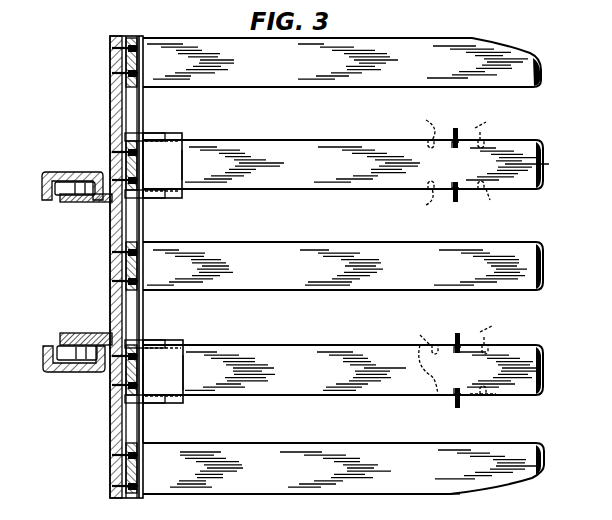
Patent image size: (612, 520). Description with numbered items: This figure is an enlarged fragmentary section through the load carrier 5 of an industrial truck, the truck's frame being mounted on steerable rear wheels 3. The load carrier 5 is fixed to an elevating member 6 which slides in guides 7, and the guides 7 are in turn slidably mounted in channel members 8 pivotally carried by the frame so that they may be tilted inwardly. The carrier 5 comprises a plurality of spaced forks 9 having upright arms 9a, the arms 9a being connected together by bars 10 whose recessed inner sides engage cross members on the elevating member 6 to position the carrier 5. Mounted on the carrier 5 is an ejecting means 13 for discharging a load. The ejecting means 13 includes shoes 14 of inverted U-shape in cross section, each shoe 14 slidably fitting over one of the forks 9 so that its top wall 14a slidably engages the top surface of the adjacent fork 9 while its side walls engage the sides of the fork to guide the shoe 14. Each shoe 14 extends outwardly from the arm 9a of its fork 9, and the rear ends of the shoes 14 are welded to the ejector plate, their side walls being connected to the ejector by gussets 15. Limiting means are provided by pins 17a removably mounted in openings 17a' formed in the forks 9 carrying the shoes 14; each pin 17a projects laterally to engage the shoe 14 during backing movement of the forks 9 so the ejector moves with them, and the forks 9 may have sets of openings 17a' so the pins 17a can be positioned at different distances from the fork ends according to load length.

The rear wheels 3 is at (13, 513).
The load carrier 5 is at (455, 503).
The elevating member 6 is at (95, 333).
The guides 7 is at (58, 195).
The channel members 8 is at (78, 172).
The forks 9 is at (396, 90).
The upright arms 9a is at (118, 262).
The bars 10 is at (112, 440).
The ejecting means 13 is at (175, 419).
The shoe 14 is at (163, 268).
The top wall 14a is at (182, 168).
The gussets 15 is at (148, 133).
The pin 17a is at (449, 260).
The opening 17a' is at (454, 254).